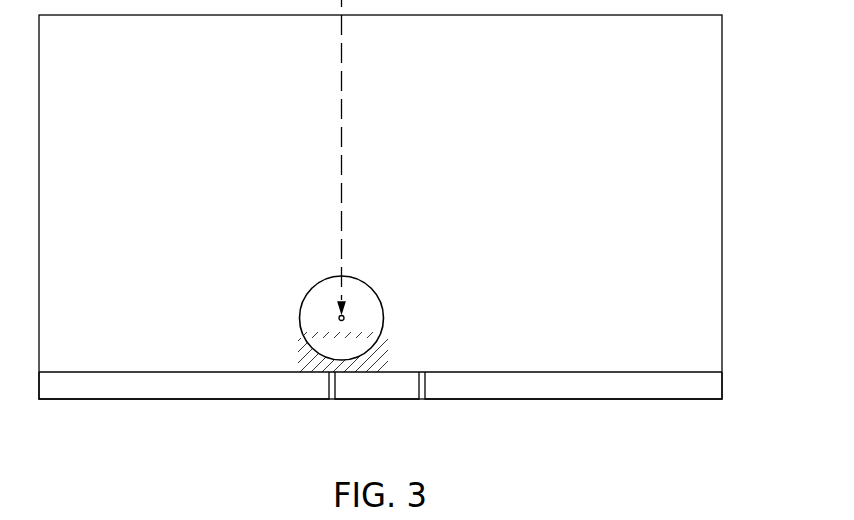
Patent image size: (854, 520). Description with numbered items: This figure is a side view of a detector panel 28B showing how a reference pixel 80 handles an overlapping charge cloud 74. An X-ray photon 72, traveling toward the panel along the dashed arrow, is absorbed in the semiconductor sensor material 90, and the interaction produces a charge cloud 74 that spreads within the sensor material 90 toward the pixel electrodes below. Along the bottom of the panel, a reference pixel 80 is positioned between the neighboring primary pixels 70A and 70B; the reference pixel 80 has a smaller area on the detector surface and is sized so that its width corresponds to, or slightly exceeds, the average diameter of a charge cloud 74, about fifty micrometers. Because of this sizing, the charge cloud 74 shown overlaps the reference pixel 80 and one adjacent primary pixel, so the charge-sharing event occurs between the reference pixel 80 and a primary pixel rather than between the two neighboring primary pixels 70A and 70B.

The semiconductor sensor material 90 is at (706, 123).
The detector panel 28B is at (734, 237).
The charge cloud 74 is at (299, 301).
The X-ray photon 72 is at (351, 314).
The primary pixel 70A is at (244, 400).
The reference pixel 80 is at (373, 400).
The primary pixel 70B is at (493, 400).